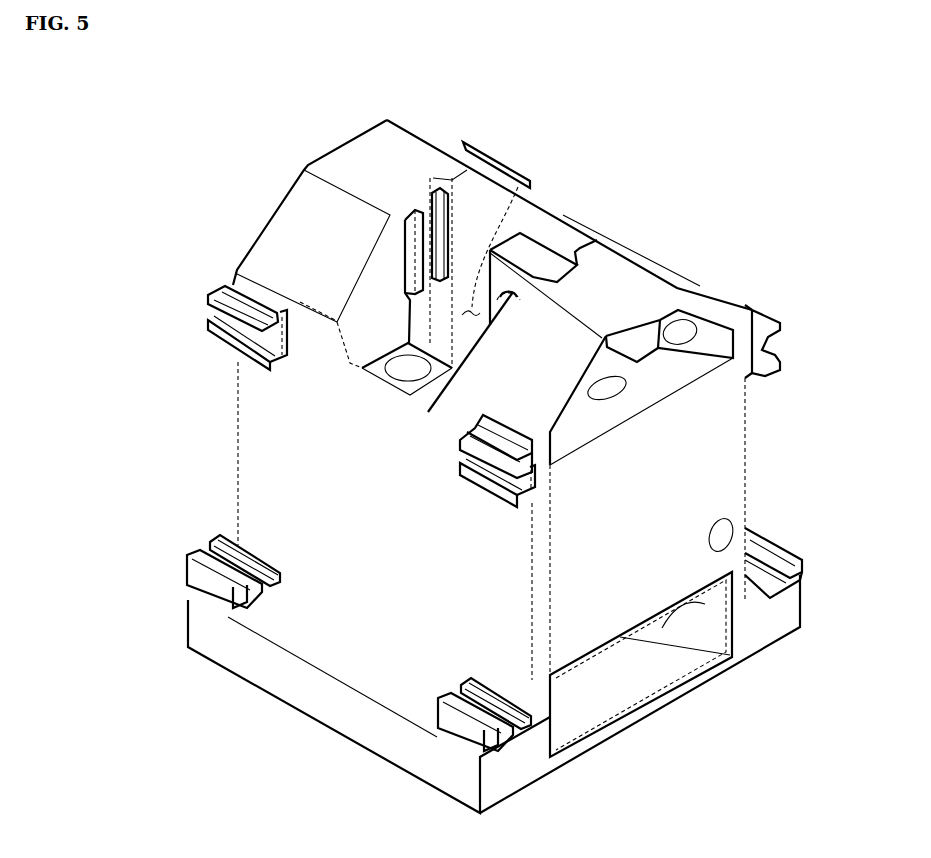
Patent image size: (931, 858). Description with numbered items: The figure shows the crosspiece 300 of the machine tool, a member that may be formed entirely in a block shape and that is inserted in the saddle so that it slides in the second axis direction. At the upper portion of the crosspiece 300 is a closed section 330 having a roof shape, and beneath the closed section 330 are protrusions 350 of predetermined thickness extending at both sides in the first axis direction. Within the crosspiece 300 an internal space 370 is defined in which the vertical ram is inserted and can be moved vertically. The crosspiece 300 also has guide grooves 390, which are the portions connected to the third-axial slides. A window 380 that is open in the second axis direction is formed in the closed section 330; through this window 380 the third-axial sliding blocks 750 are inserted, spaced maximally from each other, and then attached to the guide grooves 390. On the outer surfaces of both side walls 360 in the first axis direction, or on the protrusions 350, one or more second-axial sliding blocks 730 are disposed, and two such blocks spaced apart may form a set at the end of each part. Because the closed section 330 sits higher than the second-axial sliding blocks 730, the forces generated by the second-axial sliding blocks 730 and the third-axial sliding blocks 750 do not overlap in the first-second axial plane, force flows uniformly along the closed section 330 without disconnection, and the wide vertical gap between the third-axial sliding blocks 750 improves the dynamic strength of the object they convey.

The crosspiece 300 is at (135, 106).
The closed section 330 is at (678, 292).
The protrusions 350 is at (767, 627).
The side walls 360 is at (260, 462).
The internal space 370 is at (518, 185).
The window 380 is at (663, 378).
The guide grooves 390 is at (425, 190).
The second-axial sliding blocks 730 is at (232, 312).
The third-axial sliding blocks 750 is at (420, 247).